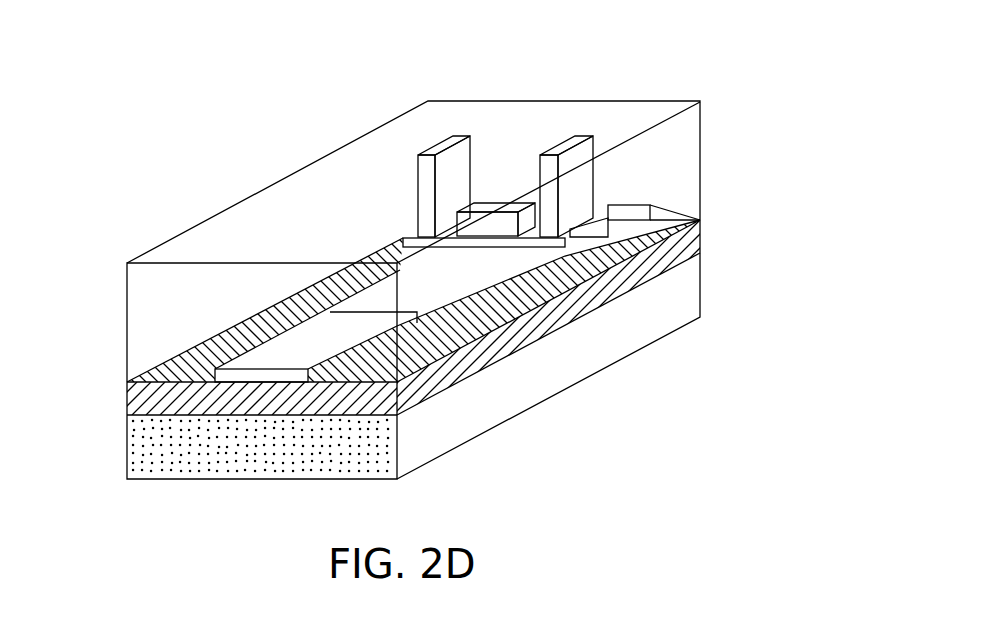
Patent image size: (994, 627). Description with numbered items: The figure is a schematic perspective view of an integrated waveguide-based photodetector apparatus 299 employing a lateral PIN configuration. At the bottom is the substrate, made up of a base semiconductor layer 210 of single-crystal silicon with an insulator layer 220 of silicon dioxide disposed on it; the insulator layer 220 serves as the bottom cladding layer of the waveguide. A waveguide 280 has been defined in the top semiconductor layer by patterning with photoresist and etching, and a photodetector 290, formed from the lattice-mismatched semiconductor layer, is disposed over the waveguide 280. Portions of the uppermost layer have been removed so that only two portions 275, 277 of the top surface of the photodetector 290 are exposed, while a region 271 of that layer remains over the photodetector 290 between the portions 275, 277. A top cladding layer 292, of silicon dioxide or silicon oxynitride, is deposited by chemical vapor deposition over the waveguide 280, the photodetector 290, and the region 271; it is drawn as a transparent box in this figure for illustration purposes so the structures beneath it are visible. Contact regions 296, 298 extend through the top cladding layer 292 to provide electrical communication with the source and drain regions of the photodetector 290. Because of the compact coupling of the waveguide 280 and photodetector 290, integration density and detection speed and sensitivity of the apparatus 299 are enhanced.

The base semiconductor layer 210 is at (142, 462).
The insulator layer 220 is at (142, 395).
The region of the layer 270 271 is at (515, 212).
The exposed portion of the photodetector top surface 275 is at (630, 203).
The exposed portion of the photodetector top surface 277 is at (410, 232).
The waveguide 280 is at (258, 377).
The photodetector 290 is at (547, 217).
The top cladding layer 292 is at (677, 100).
The contact region 296 is at (575, 136).
The contact region 298 is at (452, 136).
The integrated waveguide-based photodetector apparatus 299 is at (154, 175).